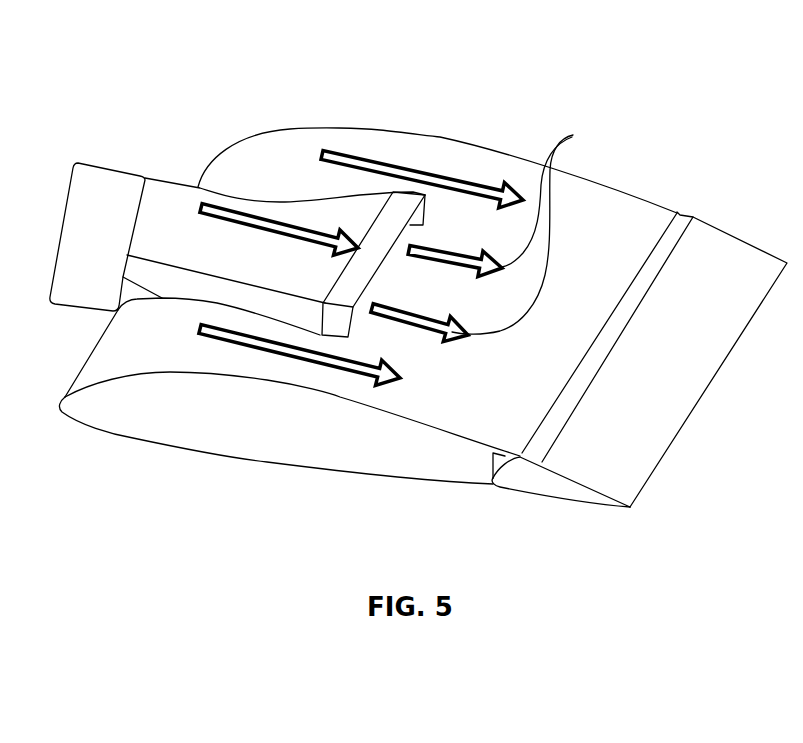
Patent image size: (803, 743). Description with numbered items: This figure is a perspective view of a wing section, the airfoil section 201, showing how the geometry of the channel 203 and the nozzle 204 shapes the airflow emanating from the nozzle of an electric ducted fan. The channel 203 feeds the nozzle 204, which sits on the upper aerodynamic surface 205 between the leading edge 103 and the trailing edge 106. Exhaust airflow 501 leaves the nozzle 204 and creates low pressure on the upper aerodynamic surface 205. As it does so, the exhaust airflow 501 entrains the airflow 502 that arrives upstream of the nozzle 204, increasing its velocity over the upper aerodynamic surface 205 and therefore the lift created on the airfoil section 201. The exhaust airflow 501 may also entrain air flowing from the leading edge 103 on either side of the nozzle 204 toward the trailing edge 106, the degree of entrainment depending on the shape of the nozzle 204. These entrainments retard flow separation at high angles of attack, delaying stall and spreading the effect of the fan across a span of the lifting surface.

The airfoil section 201 is at (582, 86).
The channel 203 is at (128, 182).
The nozzle 204 is at (398, 213).
The upper aerodynamic surface 205 is at (605, 228).
The airflow 501 is at (533, 230).
The airflow 502 is at (247, 215).
The leading edge 103 is at (120, 350).
The trailing edge 106 is at (637, 417).